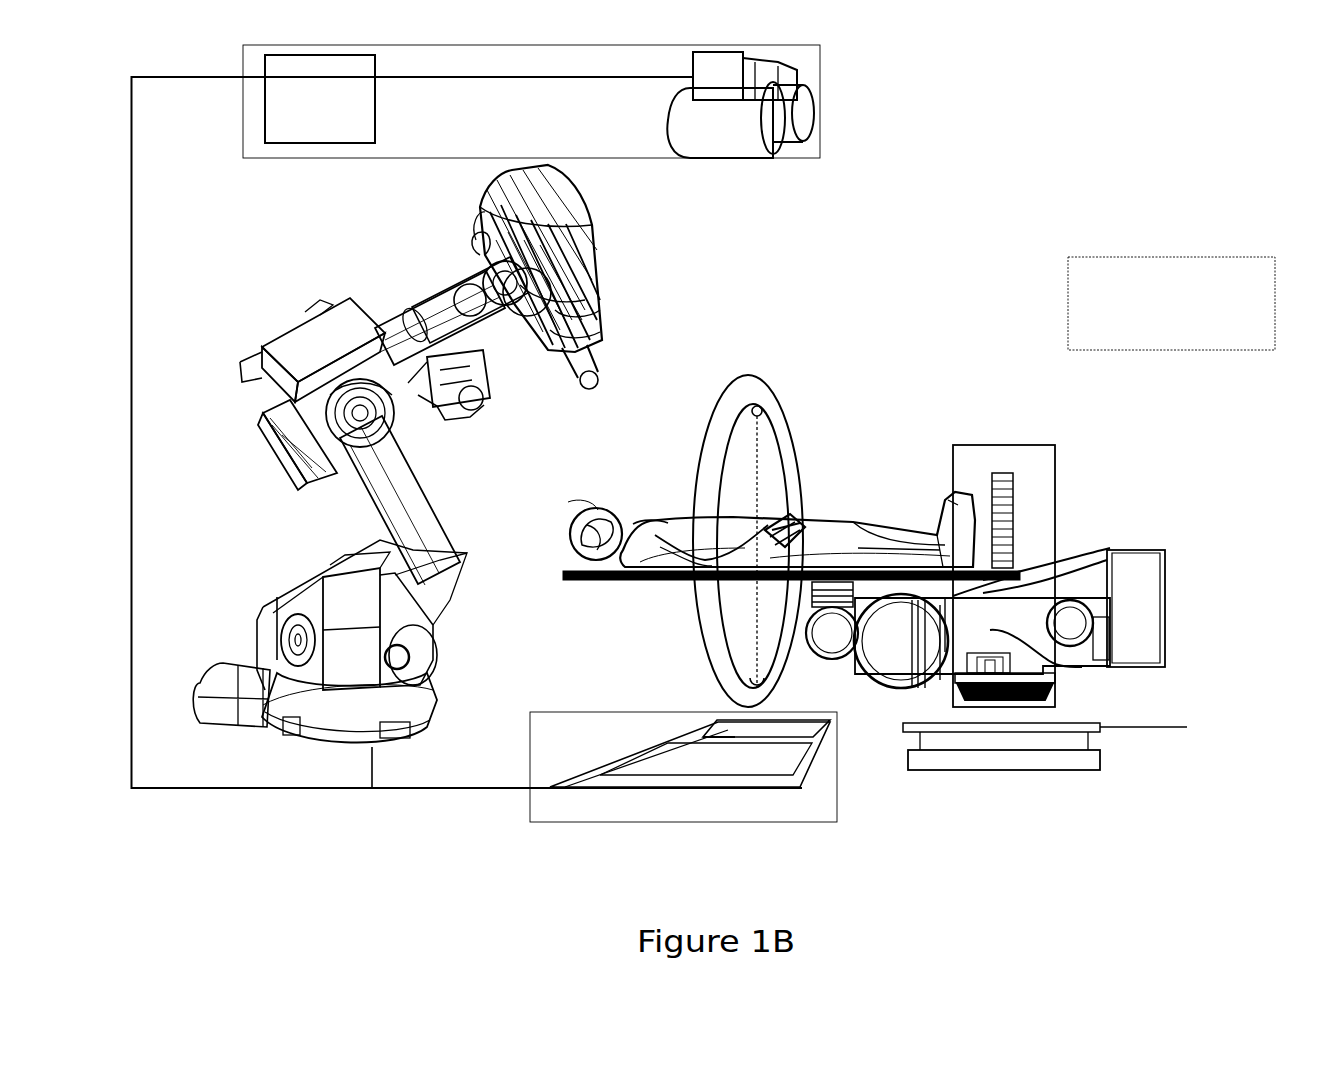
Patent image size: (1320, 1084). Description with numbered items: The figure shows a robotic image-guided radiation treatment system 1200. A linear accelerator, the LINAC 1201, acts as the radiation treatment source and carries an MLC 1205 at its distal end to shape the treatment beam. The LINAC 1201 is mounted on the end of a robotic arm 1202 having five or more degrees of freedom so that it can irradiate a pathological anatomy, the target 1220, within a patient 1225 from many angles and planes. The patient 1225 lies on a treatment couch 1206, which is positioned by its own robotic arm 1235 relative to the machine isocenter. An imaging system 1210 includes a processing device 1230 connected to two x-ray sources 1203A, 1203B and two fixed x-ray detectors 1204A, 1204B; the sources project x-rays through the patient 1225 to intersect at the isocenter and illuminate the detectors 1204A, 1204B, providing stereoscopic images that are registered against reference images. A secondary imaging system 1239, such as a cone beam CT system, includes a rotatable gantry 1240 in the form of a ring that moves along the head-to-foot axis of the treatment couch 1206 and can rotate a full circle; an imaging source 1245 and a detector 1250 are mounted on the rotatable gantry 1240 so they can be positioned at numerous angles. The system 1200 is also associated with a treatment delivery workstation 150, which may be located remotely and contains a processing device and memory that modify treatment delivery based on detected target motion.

The radiation treatment system 1200 is at (1093, 178).
The treatment delivery workstation 150 is at (1171, 303).
The linear accelerator (LINAC) 1201 is at (612, 249).
The robotic arm 1202 is at (286, 314).
The MLC 1205 is at (600, 377).
The treatment couch 1206 is at (548, 576).
The imaging system 1210 is at (822, 78).
The x-ray source 1203A is at (760, 158).
The x-ray source 1203B is at (812, 115).
The x-ray detector 1204A is at (830, 725).
The x-ray detector 1204B is at (717, 787).
The target 1220 is at (797, 524).
The patient 1225 is at (584, 518).
The processing device 1230 is at (320, 99).
The robotic arm 1235 is at (1100, 546).
The secondary imaging system 1239 is at (792, 530).
The rotatable gantry 1240 is at (704, 420).
The imaging source 1245 is at (793, 531).
The detector 1250 is at (766, 679).